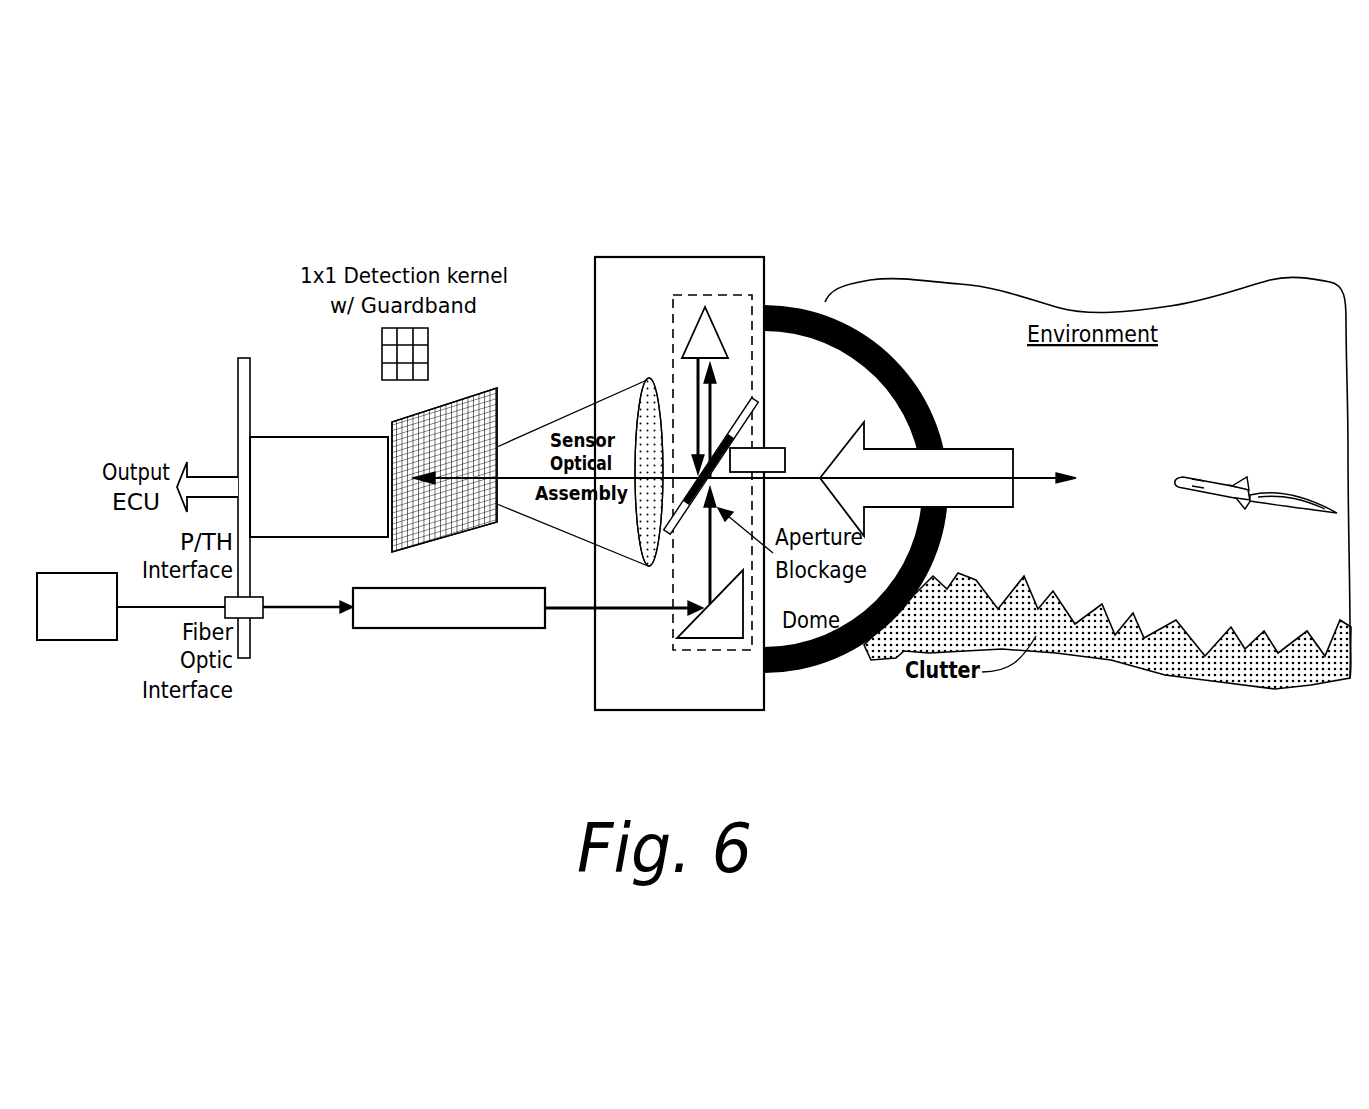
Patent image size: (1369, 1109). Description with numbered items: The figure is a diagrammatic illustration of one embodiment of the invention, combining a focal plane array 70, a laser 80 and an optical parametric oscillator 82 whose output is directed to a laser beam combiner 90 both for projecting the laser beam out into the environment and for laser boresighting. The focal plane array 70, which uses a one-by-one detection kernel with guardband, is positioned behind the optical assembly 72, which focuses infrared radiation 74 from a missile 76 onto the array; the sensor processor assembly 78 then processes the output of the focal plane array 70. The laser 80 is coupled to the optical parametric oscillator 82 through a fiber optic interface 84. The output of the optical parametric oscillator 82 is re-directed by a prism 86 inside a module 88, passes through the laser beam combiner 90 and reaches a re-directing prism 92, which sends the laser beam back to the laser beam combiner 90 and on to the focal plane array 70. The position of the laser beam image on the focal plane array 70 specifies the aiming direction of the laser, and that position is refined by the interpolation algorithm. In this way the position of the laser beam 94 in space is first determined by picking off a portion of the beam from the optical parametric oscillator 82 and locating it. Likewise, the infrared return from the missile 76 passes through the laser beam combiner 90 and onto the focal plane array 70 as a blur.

The focal plane array 70 is at (445, 538).
The optical assembly 72 is at (647, 378).
The infrared radiation 74 is at (945, 467).
The missile 76 is at (1182, 473).
The sensor processor assembly 78 is at (335, 437).
The laser 80 is at (77, 606).
The optical parametric oscillator 82 is at (449, 608).
The fiber optic interface 84 is at (283, 603).
The prism 86 is at (726, 622).
The module 88 is at (745, 258).
The laser beam combiner 90 is at (752, 421).
The re-directing prism 92 is at (715, 330).
The laser beam 94 is at (1024, 480).